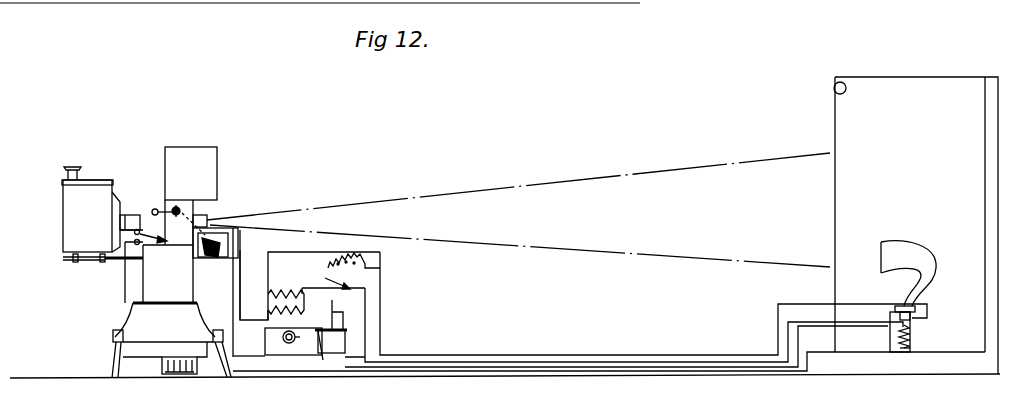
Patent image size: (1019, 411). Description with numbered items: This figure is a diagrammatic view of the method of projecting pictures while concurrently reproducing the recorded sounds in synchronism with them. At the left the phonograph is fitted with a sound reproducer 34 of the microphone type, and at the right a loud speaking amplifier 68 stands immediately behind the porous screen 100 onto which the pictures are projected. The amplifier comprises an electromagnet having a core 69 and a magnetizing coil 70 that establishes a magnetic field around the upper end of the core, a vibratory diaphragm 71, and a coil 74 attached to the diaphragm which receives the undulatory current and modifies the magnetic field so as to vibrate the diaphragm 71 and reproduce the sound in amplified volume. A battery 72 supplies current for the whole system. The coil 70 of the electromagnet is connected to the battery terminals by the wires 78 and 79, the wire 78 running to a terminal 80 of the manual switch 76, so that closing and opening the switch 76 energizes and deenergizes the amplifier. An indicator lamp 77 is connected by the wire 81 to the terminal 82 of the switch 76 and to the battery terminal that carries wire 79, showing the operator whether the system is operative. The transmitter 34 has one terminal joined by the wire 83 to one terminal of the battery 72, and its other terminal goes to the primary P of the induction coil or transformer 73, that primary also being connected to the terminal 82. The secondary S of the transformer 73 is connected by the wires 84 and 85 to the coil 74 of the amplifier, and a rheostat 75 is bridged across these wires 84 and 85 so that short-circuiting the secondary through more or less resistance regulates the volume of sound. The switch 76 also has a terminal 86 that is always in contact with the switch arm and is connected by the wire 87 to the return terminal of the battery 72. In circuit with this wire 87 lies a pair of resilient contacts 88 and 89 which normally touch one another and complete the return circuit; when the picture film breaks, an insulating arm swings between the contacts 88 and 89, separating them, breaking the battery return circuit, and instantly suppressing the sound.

The screen 100 is at (839, 97).
The sound reproducer 34 is at (215, 243).
The contact 88 is at (138, 230).
The contact 89 is at (146, 245).
The wire 83 is at (232, 283).
The battery 72 is at (162, 363).
The induction coil or transformer 73 is at (268, 295).
The rheostat 75 is at (328, 267).
The terminal 86 is at (334, 300).
The manual switch 76 is at (332, 318).
The wire 87 is at (244, 356).
The wire 81 is at (288, 341).
The lamp 77 is at (296, 340).
The terminal 80 is at (331, 344).
The terminal 82 is at (314, 353).
The wire 84 is at (427, 355).
The wire 85 is at (450, 362).
The wire 78 is at (517, 367).
The wire 79 is at (560, 370).
The loud speaking amplifier 68 is at (936, 271).
The vibratory diaphragm 71 is at (909, 303).
The coil 74 is at (913, 318).
The core 69 is at (910, 330).
The magnetizing coil 70 is at (910, 343).